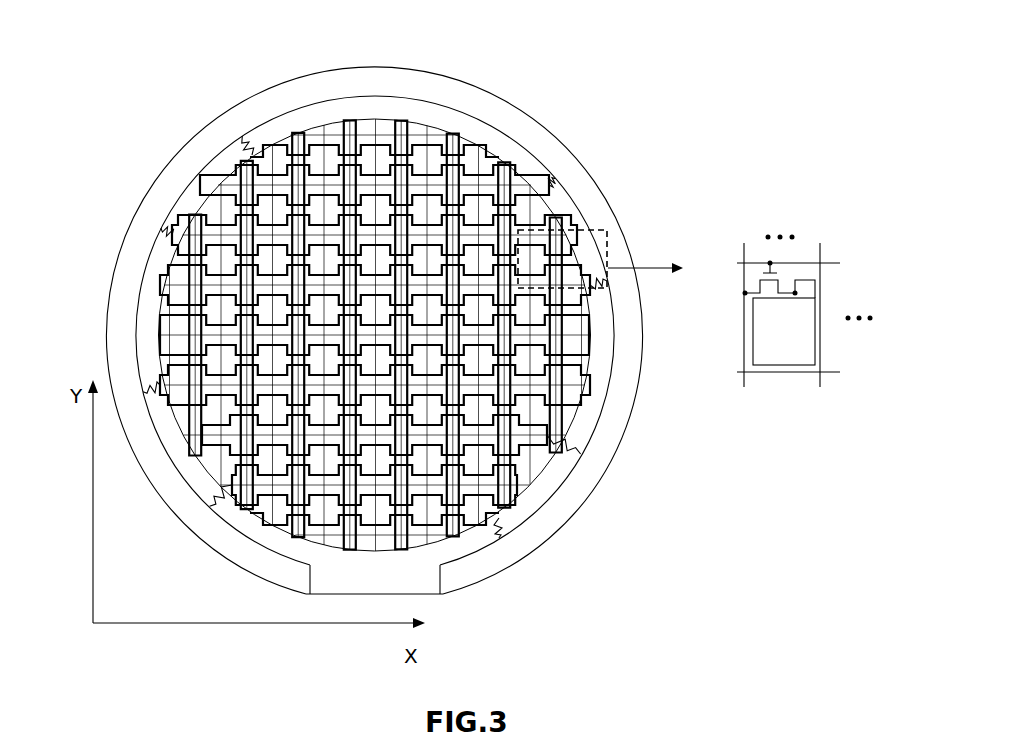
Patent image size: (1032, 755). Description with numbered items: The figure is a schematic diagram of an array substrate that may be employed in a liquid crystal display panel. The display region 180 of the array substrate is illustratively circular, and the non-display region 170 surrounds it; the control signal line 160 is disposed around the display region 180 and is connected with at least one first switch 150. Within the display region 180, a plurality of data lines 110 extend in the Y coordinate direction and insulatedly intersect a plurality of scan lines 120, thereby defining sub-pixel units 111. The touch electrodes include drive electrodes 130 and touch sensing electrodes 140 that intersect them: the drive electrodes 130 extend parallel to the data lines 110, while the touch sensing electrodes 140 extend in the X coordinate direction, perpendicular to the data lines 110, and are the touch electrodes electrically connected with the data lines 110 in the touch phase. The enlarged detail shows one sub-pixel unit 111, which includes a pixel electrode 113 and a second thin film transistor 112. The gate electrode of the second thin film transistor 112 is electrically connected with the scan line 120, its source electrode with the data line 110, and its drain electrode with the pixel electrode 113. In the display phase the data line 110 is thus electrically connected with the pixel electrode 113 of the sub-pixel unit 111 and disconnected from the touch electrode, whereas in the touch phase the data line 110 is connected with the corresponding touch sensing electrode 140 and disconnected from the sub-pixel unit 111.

The data line 110 is at (368, 133).
The sub-pixel unit 111 is at (748, 308).
The second thin film transistor 112 is at (760, 282).
The pixel electrode 113 is at (807, 302).
The scan line 120 is at (523, 180).
The drive electrode 130 is at (463, 135).
The touch sensing electrode 140 is at (553, 200).
The first switch 150 is at (247, 150).
The control signal line 160 is at (173, 235).
The non-display region 170 is at (408, 80).
The display region 180 is at (363, 118).